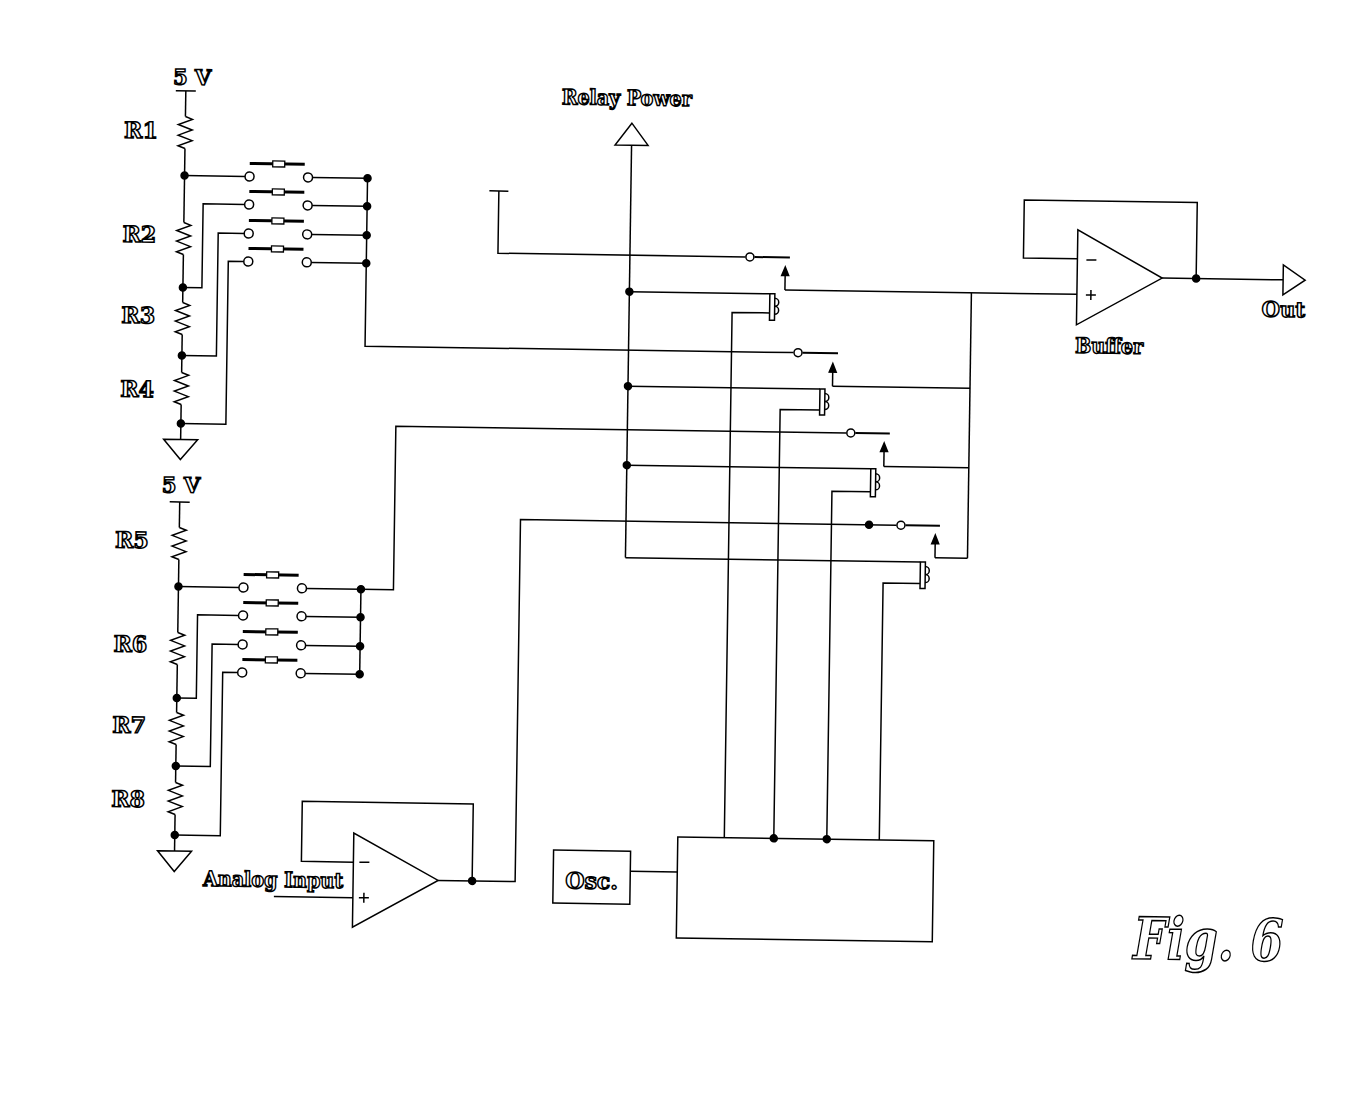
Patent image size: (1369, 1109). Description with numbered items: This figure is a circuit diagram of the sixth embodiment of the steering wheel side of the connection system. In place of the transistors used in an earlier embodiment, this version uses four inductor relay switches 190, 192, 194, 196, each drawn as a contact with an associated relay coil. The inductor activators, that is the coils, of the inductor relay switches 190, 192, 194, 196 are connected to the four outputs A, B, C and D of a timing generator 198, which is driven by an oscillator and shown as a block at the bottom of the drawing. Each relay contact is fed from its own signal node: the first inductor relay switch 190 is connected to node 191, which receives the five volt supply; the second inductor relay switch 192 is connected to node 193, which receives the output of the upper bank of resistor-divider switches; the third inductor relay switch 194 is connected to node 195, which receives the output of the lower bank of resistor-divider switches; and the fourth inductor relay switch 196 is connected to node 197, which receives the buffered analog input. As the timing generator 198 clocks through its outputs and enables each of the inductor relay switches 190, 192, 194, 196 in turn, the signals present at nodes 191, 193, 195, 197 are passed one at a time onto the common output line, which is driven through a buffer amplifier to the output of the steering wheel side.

The inductor relay switch 190 is at (849, 528).
The node 191 is at (614, 211).
The inductor relay switch 192 is at (796, 579).
The node 193 is at (580, 265).
The inductor relay switch 194 is at (795, 622).
The node 195 is at (604, 490).
The inductor relay switch 196 is at (794, 665).
The node 197 is at (667, 683).
The timing generator 198 is at (938, 837).